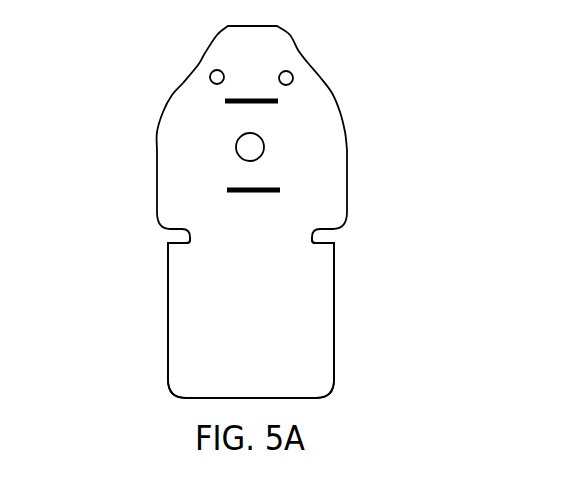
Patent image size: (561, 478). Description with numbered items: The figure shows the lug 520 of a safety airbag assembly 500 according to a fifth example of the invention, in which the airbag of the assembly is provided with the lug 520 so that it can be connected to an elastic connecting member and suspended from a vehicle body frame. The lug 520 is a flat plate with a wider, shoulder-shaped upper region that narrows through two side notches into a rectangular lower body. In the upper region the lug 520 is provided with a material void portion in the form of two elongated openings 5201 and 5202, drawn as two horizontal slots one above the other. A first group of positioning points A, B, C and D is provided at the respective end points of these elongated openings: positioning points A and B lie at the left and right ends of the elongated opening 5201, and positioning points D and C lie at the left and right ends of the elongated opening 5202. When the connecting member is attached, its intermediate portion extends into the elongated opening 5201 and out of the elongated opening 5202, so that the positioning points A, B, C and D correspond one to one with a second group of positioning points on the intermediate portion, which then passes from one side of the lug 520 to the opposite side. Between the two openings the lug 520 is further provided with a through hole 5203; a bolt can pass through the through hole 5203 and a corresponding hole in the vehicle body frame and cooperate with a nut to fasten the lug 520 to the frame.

The safety airbag assembly 500 is at (370, 20).
The lug 520 is at (260, 243).
The elongated opening 5201 is at (252, 104).
The elongated opening 5202 is at (255, 193).
The through hole 5203 is at (258, 146).
The positioning point A is at (216, 100).
The positioning point B is at (287, 99).
The positioning point C is at (289, 193).
The positioning point D is at (218, 194).